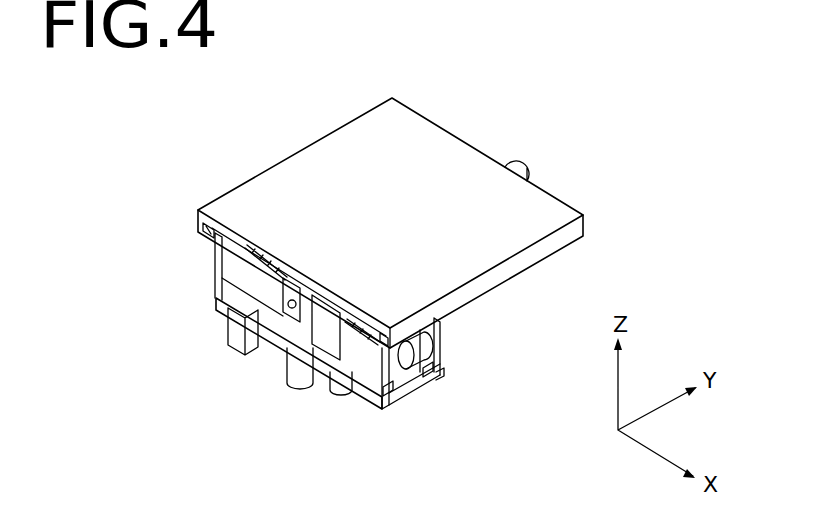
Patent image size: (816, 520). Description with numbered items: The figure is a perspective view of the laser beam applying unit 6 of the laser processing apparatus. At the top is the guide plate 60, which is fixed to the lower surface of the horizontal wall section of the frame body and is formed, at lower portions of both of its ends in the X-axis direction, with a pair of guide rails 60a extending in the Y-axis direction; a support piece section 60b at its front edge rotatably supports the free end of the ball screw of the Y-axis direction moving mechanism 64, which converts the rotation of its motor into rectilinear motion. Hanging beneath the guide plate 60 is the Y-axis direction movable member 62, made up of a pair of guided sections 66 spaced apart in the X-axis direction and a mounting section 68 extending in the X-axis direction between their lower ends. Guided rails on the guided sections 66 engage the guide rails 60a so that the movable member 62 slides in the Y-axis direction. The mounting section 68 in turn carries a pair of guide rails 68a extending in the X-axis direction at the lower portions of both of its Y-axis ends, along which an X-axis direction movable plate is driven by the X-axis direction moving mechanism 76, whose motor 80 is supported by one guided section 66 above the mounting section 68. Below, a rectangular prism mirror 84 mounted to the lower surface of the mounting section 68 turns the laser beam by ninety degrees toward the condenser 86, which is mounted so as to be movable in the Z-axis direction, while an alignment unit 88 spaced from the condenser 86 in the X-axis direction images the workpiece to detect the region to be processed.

The laser beam applying unit 6 is at (182, 206).
The guide plate 60 is at (417, 123).
The guide rails 60a is at (201, 227).
The support piece section 60b is at (288, 298).
The Y-axis direction movable member 62 is at (387, 407).
The Y-axis direction moving mechanism 64 is at (536, 161).
The guided sections 66 is at (238, 263).
The mounting section 68 is at (366, 400).
The guide rails 68a is at (394, 392).
The X-axis direction moving mechanism 76 is at (439, 377).
The motor 80 is at (439, 360).
The rectangular prism mirror 84 is at (232, 344).
The condenser 86 is at (285, 382).
The alignment unit 88 is at (336, 392).